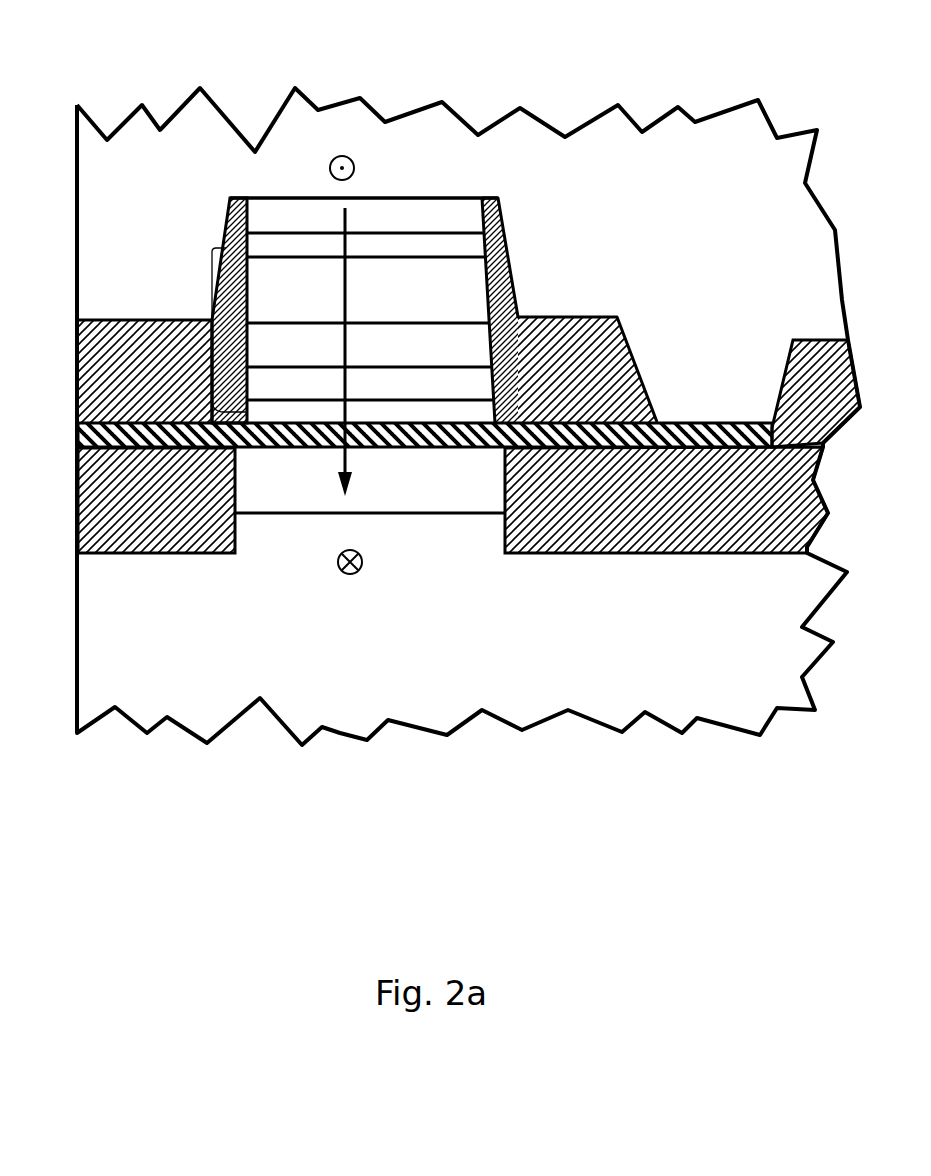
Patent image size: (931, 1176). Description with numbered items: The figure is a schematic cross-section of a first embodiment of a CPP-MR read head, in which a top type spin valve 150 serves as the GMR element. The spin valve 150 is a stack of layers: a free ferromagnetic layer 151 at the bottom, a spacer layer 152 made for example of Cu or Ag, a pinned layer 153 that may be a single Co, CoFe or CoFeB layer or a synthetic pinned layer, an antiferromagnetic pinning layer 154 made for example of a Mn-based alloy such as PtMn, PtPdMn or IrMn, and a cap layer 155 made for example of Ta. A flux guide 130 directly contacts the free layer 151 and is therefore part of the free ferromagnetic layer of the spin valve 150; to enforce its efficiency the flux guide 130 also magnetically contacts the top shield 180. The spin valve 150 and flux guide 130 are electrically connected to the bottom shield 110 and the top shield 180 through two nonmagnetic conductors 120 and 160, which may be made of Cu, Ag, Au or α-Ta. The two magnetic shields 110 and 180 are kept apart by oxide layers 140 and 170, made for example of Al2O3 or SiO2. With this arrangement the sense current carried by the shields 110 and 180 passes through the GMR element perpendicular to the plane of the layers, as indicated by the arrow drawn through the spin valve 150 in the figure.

The bottom shield 110 is at (110, 665).
The nonmagnetic conductor 120 is at (290, 488).
The flux guide 130 is at (80, 443).
The oxide layer 140 is at (107, 517).
The top type spin valve 150 is at (212, 308).
The free ferromagnetic layer 151 is at (468, 420).
The spacer layer 152 is at (440, 388).
The pinned layer 153 is at (410, 348).
The antiferromagnetic pinning layer 154 is at (385, 283).
The cap layer 155 is at (315, 243).
The nonmagnetic conductor 160 is at (133, 187).
The oxide layer 170 is at (93, 388).
The top shield 180 is at (132, 190).